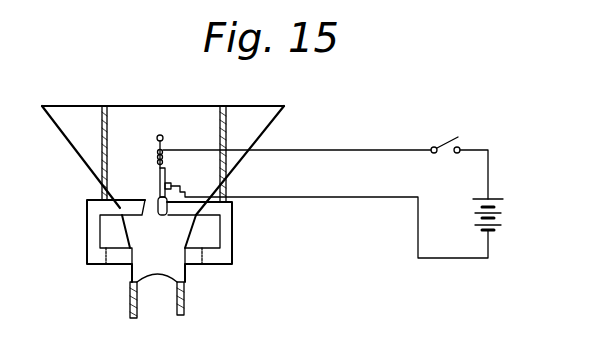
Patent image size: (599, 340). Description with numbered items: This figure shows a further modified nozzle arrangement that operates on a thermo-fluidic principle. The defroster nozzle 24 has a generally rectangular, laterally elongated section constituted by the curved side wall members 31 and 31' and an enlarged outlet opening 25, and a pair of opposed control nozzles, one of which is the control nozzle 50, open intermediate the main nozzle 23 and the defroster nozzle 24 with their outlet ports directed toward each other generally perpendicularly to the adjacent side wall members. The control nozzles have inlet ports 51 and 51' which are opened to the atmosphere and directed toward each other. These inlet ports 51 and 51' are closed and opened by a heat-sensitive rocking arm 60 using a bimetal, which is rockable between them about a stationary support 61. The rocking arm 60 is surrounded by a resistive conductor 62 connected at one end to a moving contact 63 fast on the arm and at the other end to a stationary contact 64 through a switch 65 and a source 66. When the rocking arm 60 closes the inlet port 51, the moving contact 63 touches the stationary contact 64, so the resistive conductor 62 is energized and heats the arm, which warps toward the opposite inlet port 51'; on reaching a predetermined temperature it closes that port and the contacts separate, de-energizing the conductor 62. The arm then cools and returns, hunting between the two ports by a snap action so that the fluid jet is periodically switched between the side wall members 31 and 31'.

The main nozzle 23 is at (184, 303).
The defroster nozzle 24 is at (237, 172).
The enlarged outlet opening 25 is at (110, 106).
The curved side wall member 31 is at (260, 160).
The curved side wall member 31' is at (73, 157).
The control nozzle 50 is at (88, 222).
The inlet port 51 is at (235, 228).
The inlet port 51' is at (89, 211).
The heat-sensitive rocking arm 60 is at (158, 170).
The stationary support 61 is at (163, 135).
The resistive conductor 62 is at (156, 138).
The moving contact 63 is at (158, 194).
The stationary contact 64 is at (170, 184).
The switch 65 is at (450, 139).
The source 66 is at (503, 219).